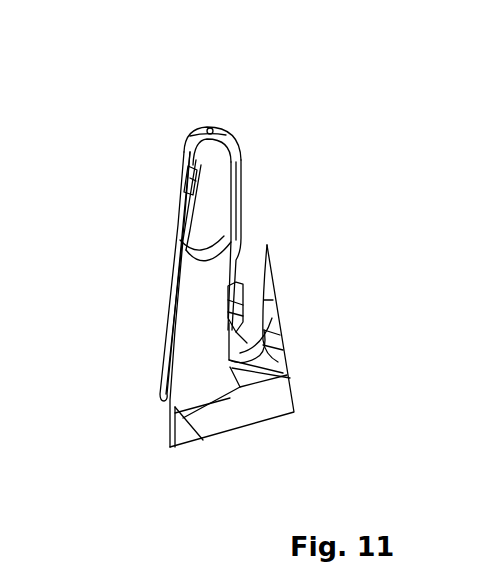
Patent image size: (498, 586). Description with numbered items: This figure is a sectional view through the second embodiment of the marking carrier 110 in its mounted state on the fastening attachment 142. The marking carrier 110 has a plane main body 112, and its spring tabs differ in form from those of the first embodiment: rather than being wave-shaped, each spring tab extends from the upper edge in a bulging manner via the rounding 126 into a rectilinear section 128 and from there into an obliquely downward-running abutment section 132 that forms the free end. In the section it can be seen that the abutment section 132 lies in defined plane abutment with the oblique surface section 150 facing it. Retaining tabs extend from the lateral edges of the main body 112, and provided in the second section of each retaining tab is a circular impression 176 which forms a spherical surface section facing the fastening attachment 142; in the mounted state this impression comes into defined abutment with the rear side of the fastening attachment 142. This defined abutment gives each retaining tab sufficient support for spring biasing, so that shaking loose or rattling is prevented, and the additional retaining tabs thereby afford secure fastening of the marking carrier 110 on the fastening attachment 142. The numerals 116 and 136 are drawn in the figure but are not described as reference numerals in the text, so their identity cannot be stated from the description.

The marking carrier 110 is at (193, 108).
The main body 112 is at (168, 327).
The hook strand 116 is at (182, 198).
The rounding 126 is at (232, 140).
The rectilinear section 128 is at (240, 175).
The abutment section 132 is at (190, 233).
The bracket 136 is at (172, 378).
The fastening attachment 142 is at (180, 287).
The oblique surface section 150 is at (178, 253).
The circular impression 176 is at (175, 332).